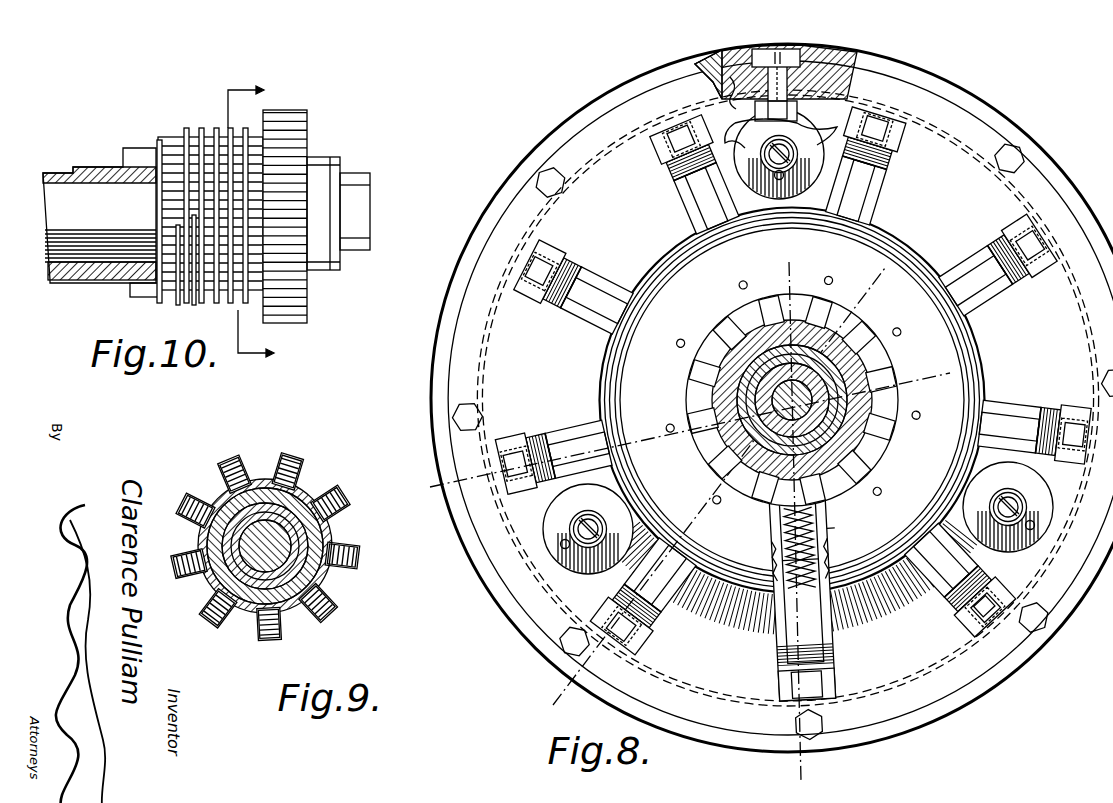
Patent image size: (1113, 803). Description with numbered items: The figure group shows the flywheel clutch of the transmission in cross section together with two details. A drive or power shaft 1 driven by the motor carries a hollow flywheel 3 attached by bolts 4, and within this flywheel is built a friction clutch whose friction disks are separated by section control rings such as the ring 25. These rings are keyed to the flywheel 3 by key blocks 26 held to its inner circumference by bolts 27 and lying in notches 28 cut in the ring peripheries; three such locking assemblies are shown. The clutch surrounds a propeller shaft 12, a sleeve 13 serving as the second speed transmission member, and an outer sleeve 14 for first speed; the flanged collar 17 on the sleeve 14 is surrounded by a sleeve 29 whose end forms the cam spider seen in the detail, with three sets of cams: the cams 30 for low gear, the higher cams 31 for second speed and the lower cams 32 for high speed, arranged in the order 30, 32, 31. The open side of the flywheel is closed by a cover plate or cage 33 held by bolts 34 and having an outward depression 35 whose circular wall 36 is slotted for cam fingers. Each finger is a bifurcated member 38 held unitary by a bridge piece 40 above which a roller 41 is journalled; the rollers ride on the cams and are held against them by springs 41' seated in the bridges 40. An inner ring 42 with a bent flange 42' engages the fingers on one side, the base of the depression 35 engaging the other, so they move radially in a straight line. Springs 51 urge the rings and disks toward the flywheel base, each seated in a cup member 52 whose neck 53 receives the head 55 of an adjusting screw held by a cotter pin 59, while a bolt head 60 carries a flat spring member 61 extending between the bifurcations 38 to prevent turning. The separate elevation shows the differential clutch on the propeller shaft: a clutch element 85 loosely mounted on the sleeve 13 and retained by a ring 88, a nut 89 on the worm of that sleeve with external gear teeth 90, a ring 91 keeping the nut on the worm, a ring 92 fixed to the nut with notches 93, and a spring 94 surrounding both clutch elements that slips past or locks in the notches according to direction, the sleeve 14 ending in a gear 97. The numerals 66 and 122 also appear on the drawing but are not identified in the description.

In FIG. 8, the drive or power shaft 1 is at (789, 519).
In FIG. 8, the hollow flywheel 3 is at (820, 58).
In FIG. 8, the bolts 4 is at (672, 426).
In FIG. 8, the propeller shaft 12 is at (826, 310).
In FIG. 9, the propeller shaft 12 is at (300, 541).
In FIG. 10, the propeller shaft 12 is at (366, 200).
In FIG. 8, the sleeve 13 is at (862, 364).
In FIG. 9, the sleeve 13 is at (316, 562).
In FIG. 10, the sleeve 13 is at (99, 215).
In FIG. 8, the sleeve 14 is at (730, 342).
In FIG. 9, the sleeve 14 is at (300, 500).
In FIG. 10, the sleeve 14 is at (72, 280).
In FIG. 8, the flanged collar 17 is at (862, 432).
In FIG. 9, the flanged collar 17 is at (215, 536).
In FIG. 10, the flanged collar 17 is at (259, 222).
In FIG. 8, the section control ring 25 is at (700, 72).
In FIG. 8, the key blocks 26 is at (728, 77).
In FIG. 8, the bolts 27 is at (777, 49).
In FIG. 8, the notches 28 is at (798, 112).
In FIG. 8, the sleeve 29 is at (722, 454).
In FIG. 9, the sleeve 29 is at (246, 622).
In FIG. 9, the cams 30 is at (196, 491).
In FIG. 9, the cams 31 is at (296, 461).
In FIG. 9, the cams 32 is at (246, 461).
In FIG. 8, the cover plate or cage 33 is at (772, 398).
In FIG. 8, the bolts 34 is at (556, 173).
In FIG. 8, the outward depression 35 is at (792, 400).
In FIG. 8, the circular wall 36 is at (982, 372).
In FIG. 8, the bifurcated member 38 is at (880, 206).
In FIG. 8, the bridge piece 40 is at (804, 581).
In FIG. 8, the roller 41 is at (792, 462).
In FIG. 8, the springs 41' is at (772, 598).
In FIG. 8, the inner ring 42 is at (822, 556).
In FIG. 8, the flange 42' is at (845, 510).
In FIG. 8, the springs 51 is at (745, 137).
In FIG. 8, the cup member 52 is at (749, 154).
In FIG. 8, the neck 53 is at (766, 187).
In FIG. 8, the head 55 is at (800, 155).
In FIG. 8, the cotter pin 59 is at (790, 180).
In FIG. 8, the head 60 is at (900, 150).
In FIG. 8, the flat spring member 61 is at (896, 166).
In FIG. 8, the nut 66 is at (976, 620).
In FIG. 10, the clutch element 85 is at (298, 135).
In FIG. 10, the ring 88 is at (336, 172).
In FIG. 10, the nut 89 is at (180, 302).
In FIG. 10, the external gear teeth 90 is at (225, 305).
In FIG. 10, the ring 91 is at (156, 150).
In FIG. 9, the ring 92 is at (350, 556).
In FIG. 10, the ring 92 is at (184, 141).
In FIG. 10, the notches 93 is at (200, 302).
In FIG. 10, the spring 94 is at (206, 130).
In FIG. 10, the gear 97 is at (132, 292).
In FIG. 8, the bolt hole 122 is at (681, 338).